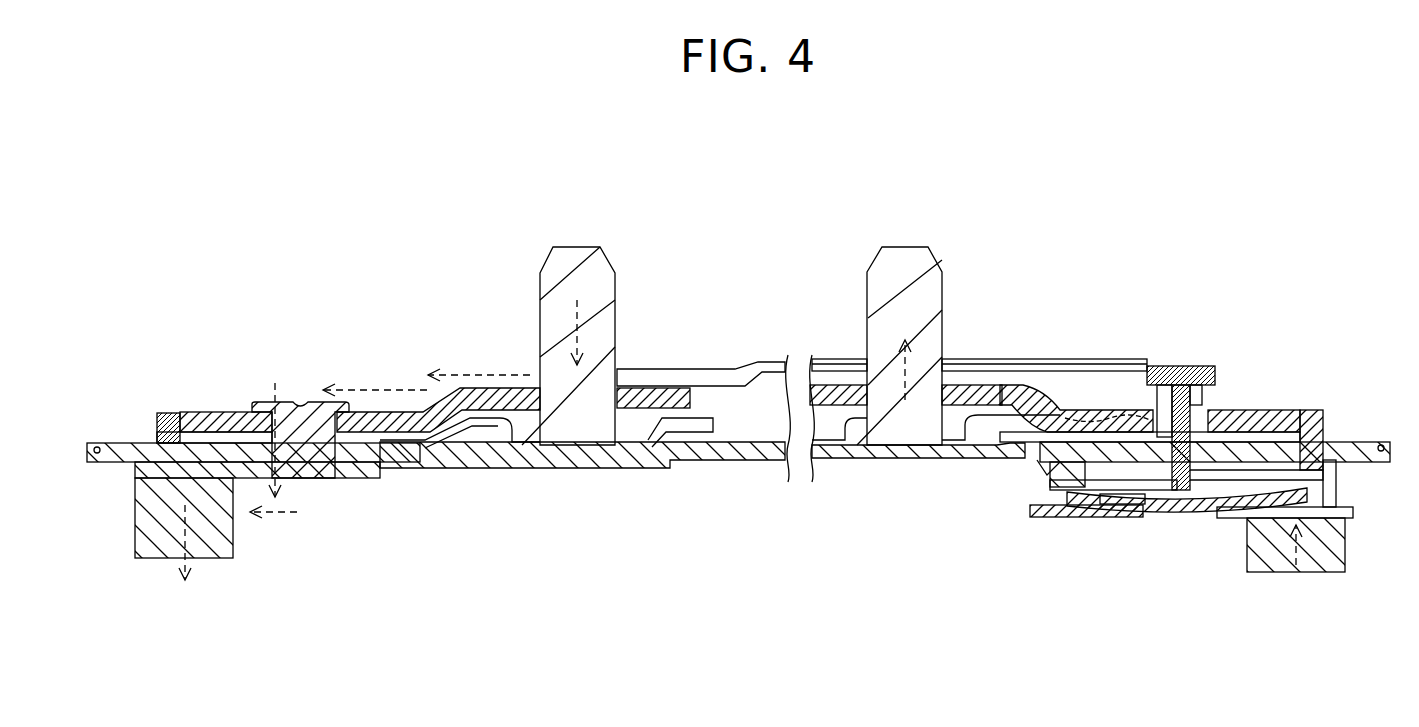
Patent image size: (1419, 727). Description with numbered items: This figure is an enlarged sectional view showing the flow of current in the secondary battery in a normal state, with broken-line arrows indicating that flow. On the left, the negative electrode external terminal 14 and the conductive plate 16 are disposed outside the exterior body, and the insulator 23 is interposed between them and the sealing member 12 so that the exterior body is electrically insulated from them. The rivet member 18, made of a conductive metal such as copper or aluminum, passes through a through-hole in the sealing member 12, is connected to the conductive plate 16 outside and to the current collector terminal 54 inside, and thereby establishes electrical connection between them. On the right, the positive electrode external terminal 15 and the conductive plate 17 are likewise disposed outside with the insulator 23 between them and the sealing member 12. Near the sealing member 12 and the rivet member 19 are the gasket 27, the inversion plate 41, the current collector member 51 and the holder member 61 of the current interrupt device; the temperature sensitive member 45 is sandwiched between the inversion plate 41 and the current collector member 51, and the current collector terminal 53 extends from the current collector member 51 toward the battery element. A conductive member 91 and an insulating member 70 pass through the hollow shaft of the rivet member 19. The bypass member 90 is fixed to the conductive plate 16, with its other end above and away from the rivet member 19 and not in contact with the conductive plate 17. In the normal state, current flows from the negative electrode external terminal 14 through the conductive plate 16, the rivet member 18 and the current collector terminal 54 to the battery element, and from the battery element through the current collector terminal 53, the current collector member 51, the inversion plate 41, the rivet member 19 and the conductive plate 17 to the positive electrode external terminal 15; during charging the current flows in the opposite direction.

The sealing member 12 is at (707, 457).
The negative electrode external terminal 14 is at (575, 262).
The positive electrode external terminal 15 is at (903, 262).
The conductive plate 16 is at (213, 412).
The conductive plate 17 is at (1047, 403).
The rivet member 18 is at (282, 402).
The rivet member 19 is at (1078, 474).
The insulator 23 is at (168, 413).
The gasket 27 is at (1253, 412).
The inversion plate 41 is at (1171, 508).
The temperature sensitive member 45 is at (1113, 506).
The current collector member 51 is at (1033, 511).
The current collector terminal 53 is at (1322, 557).
The current collector terminal 54 is at (218, 543).
The holder member 61 is at (1320, 468).
The insulating member 70 is at (1207, 393).
The bypass member 90 is at (1103, 360).
The conductive member 91 is at (1150, 382).